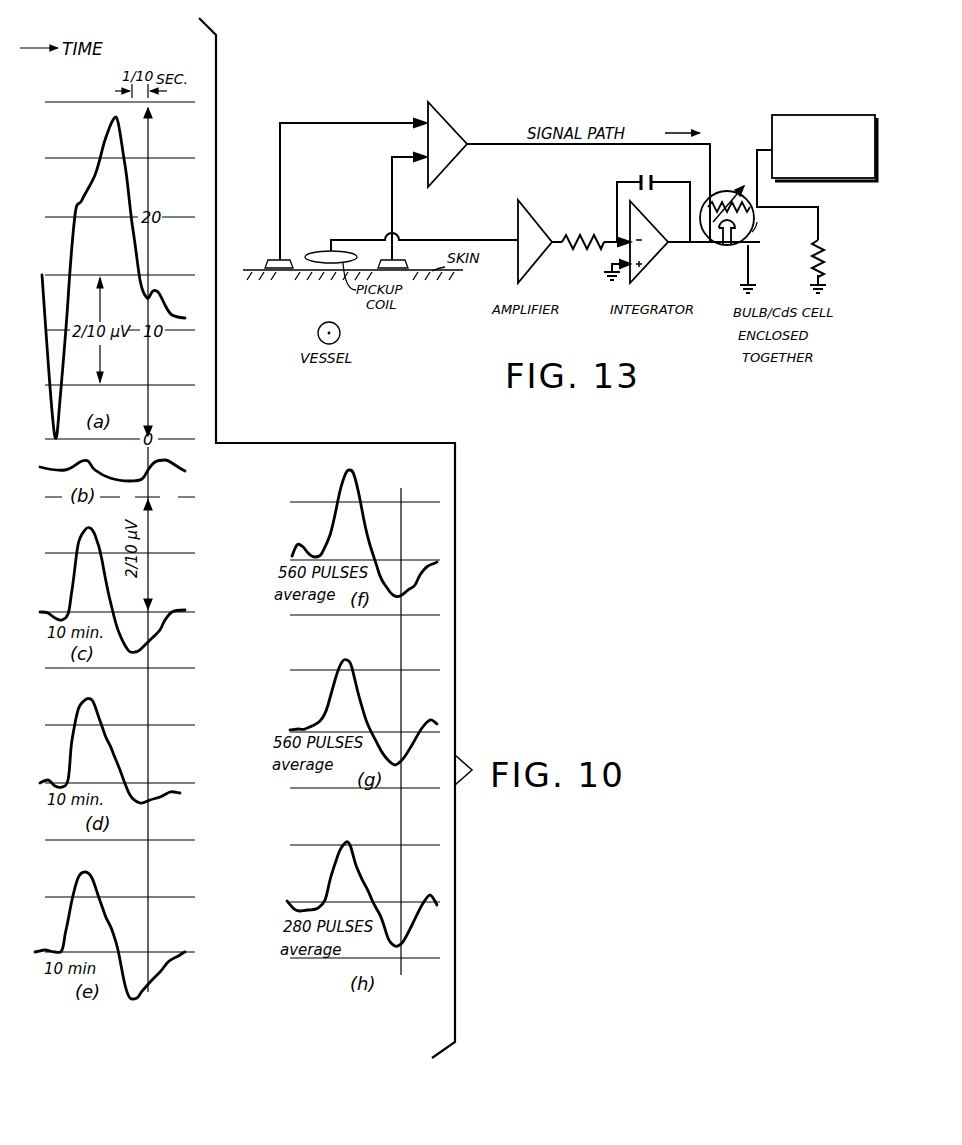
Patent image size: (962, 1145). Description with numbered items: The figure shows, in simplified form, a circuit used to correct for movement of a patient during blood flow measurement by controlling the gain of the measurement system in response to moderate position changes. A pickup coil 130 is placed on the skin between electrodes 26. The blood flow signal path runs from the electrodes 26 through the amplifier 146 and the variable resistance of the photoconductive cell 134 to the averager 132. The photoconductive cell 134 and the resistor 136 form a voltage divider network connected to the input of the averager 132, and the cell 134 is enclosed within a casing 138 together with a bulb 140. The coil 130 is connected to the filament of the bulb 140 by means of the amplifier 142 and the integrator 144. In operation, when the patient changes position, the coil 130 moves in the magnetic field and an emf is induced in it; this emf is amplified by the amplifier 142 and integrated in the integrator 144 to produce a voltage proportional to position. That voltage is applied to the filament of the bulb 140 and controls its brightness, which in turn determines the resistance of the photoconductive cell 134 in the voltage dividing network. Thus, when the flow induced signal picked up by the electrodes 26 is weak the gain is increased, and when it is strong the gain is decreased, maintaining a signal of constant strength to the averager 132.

The electrodes 26 is at (283, 269).
The pickup coil 130 is at (320, 263).
The amplifier 146 is at (447, 123).
The amplifier 142 is at (537, 267).
The integrator 144 is at (651, 268).
The averager 132 is at (829, 112).
The photoconductive cell 134 is at (733, 200).
The casing 138 is at (752, 232).
The bulb 140 is at (727, 247).
The resistor 136 is at (826, 255).